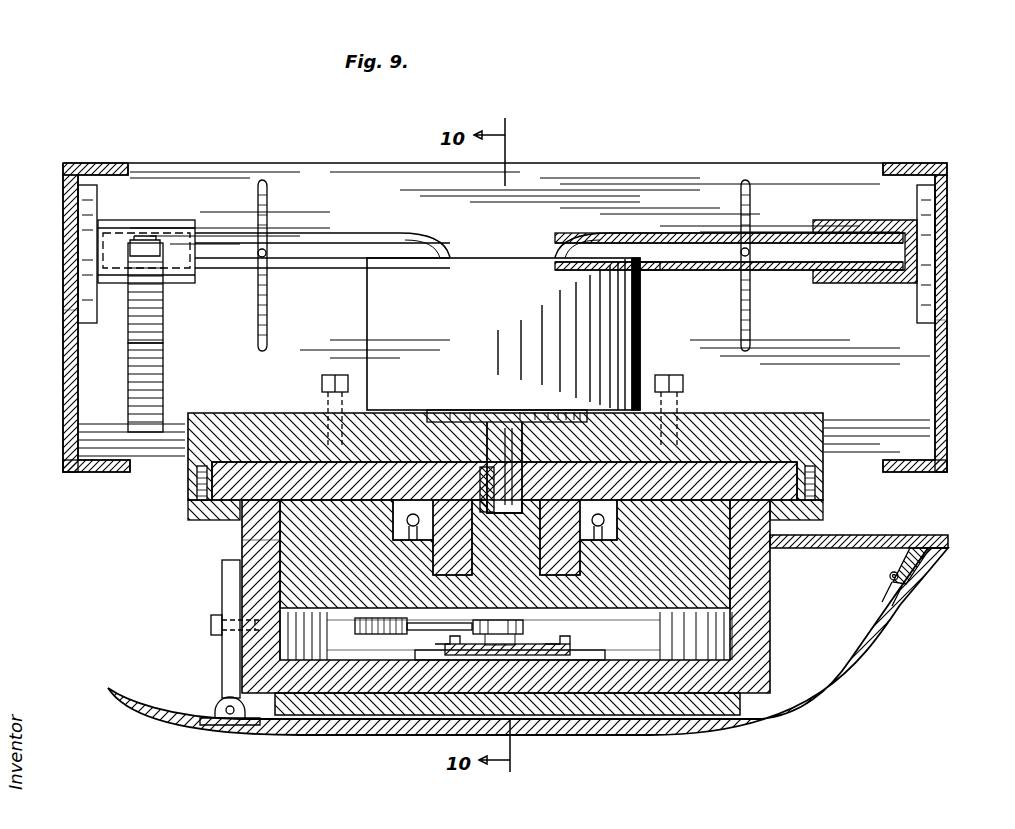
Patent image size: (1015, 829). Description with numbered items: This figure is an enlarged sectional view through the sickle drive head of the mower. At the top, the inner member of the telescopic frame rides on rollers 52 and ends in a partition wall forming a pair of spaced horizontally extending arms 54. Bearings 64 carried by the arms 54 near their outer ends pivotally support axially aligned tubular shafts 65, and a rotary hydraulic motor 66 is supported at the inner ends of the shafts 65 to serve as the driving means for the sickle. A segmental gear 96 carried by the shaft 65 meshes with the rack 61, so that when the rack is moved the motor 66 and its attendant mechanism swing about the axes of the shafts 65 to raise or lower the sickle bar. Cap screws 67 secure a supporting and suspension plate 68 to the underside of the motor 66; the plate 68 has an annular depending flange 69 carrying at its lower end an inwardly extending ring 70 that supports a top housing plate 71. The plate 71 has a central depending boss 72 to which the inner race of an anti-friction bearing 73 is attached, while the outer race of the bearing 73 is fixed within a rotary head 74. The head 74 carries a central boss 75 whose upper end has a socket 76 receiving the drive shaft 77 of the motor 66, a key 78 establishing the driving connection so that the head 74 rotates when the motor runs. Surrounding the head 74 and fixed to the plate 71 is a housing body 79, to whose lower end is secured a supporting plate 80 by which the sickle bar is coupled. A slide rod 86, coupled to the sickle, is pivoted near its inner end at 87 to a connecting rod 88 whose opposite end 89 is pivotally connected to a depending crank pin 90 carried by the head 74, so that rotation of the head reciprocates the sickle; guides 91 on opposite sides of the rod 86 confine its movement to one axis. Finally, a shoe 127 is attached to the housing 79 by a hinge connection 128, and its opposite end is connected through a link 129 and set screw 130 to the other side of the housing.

The rollers 52 is at (665, 172).
The horizontally extending arms 54 is at (63, 320).
The rack 61 is at (160, 426).
The bearings 64 is at (133, 238).
The tubular shafts 65 is at (292, 240).
The rotary hydraulic motor 66 is at (513, 340).
The cap screws 67 is at (322, 385).
The supporting and suspension plate 68 is at (788, 418).
The annular depending flange 69 is at (823, 484).
The inwardly extending ring 70 is at (215, 520).
The top housing plate 71 is at (730, 472).
The central depending boss 72 is at (568, 576).
The anti-friction bearing 73 is at (612, 523).
The rotary head 74 is at (290, 543).
The central boss 75 is at (505, 554).
The socket 76 is at (527, 490).
The drive shaft 77 is at (514, 430).
The key 78 is at (480, 470).
The housing body 79 is at (770, 607).
The supporting plate 80 is at (625, 718).
The slide rod 86 is at (453, 660).
The pivot 87 is at (525, 628).
The connecting rod 88 is at (470, 615).
The opposite end of the connecting rod 89 is at (372, 636).
The crank pin 90 is at (355, 627).
The guides 91 is at (435, 648).
The segmental gear 96 is at (165, 342).
The shoe 127 is at (884, 636).
The hinge connection 128 is at (890, 575).
The link 129 is at (226, 664).
The set screw 130 is at (211, 626).